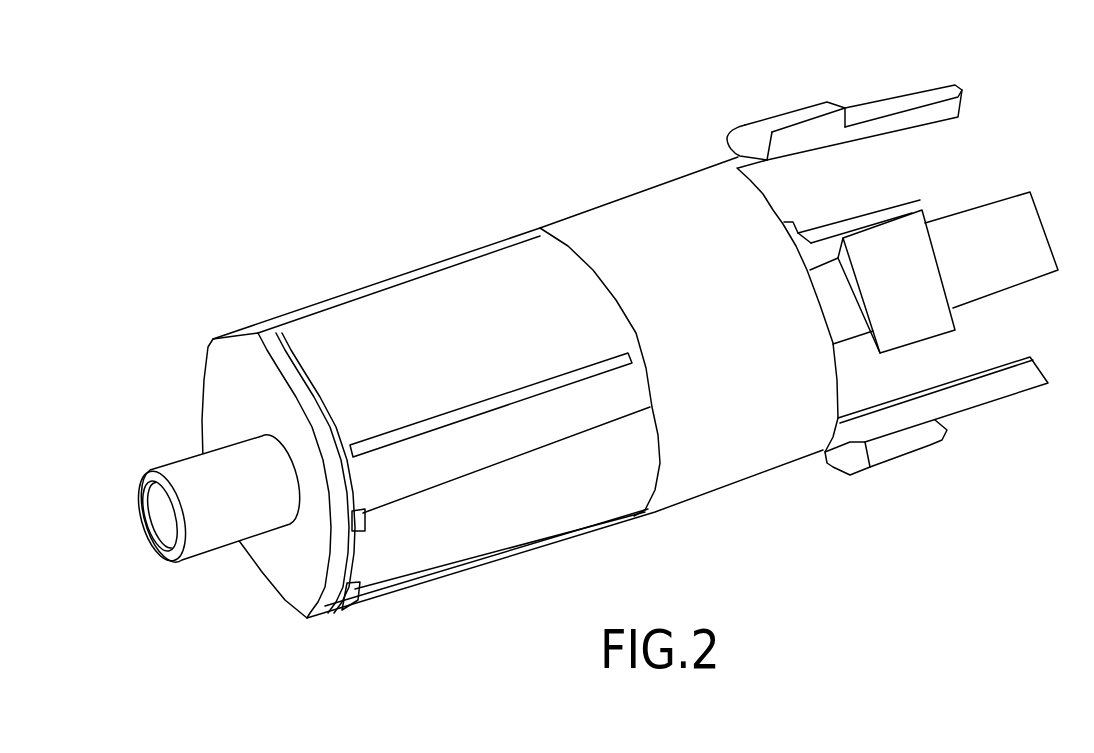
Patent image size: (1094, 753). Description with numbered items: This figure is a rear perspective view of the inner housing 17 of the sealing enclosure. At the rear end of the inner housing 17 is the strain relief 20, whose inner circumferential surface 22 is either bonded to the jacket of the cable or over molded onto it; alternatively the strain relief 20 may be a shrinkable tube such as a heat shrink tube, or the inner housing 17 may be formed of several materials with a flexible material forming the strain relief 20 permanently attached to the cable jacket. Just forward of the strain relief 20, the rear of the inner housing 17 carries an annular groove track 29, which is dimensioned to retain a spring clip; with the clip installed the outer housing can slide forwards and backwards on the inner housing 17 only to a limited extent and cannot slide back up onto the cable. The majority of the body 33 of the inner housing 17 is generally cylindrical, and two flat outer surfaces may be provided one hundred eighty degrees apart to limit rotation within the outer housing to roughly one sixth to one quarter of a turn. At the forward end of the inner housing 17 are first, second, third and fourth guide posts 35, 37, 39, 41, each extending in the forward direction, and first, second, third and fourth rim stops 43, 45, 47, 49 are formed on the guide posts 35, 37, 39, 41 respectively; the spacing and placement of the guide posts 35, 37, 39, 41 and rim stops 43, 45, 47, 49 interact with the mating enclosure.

The inner housing 17 is at (530, 165).
The strain relief 20 is at (220, 527).
The inner circumferential surface 22 is at (163, 517).
The annular groove track 29 is at (289, 358).
The body 33 is at (500, 362).
The first guide post 35 is at (1017, 218).
The second guide post 37 is at (922, 97).
The third guide post 39 is at (828, 243).
The fourth guide post 41 is at (1003, 383).
The first rim stop 43 is at (943, 277).
The second rim stop 45 is at (832, 103).
The third rim stop 47 is at (798, 233).
The fourth rim stop 49 is at (944, 430).